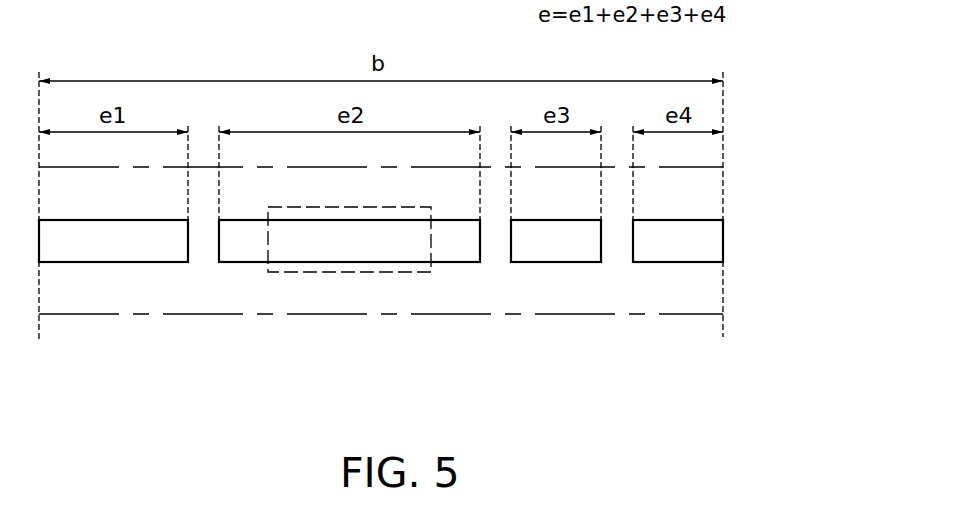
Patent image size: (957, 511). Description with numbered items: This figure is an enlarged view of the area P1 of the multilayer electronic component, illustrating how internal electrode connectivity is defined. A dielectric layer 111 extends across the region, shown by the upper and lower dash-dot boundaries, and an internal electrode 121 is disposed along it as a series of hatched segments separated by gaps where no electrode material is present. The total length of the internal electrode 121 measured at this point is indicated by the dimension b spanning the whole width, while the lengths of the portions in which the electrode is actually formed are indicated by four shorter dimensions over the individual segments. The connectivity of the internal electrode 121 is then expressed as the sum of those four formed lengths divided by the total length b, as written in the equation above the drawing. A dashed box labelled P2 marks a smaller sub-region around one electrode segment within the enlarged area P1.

The dielectric layer 111 is at (700, 289).
The internal electrode 121 is at (700, 241).
The enlarged area P1 is at (403, 415).
The second pixel region P2 is at (358, 273).